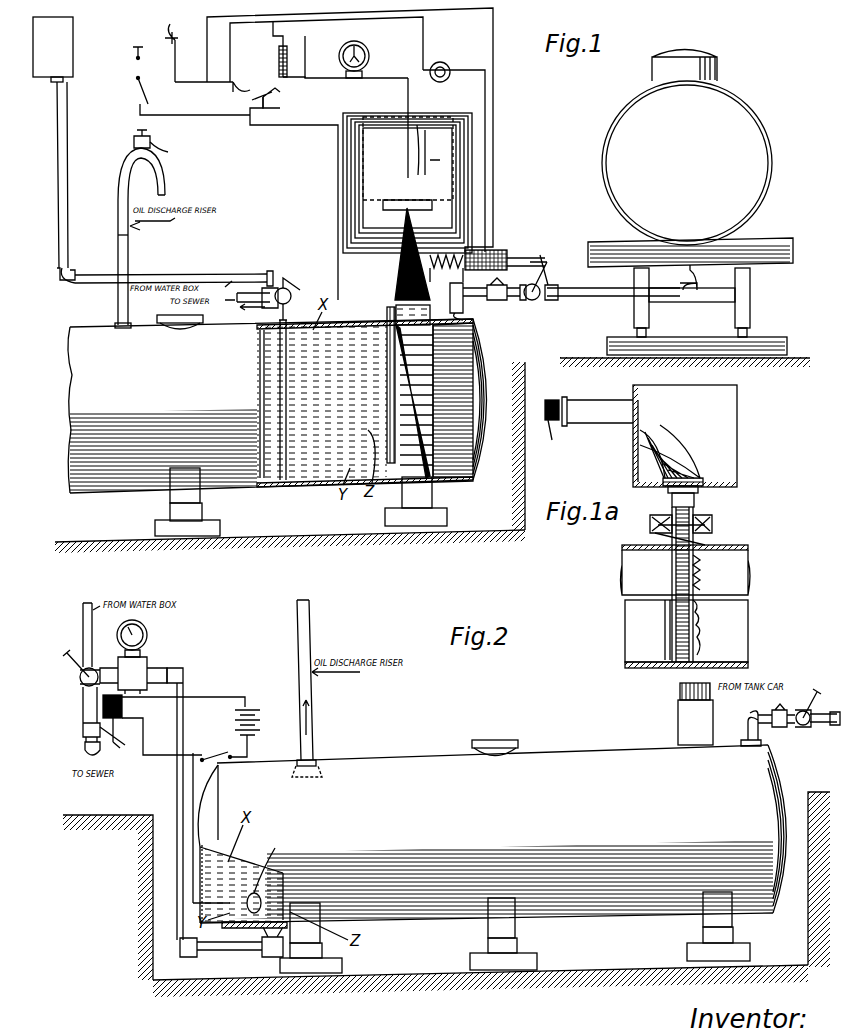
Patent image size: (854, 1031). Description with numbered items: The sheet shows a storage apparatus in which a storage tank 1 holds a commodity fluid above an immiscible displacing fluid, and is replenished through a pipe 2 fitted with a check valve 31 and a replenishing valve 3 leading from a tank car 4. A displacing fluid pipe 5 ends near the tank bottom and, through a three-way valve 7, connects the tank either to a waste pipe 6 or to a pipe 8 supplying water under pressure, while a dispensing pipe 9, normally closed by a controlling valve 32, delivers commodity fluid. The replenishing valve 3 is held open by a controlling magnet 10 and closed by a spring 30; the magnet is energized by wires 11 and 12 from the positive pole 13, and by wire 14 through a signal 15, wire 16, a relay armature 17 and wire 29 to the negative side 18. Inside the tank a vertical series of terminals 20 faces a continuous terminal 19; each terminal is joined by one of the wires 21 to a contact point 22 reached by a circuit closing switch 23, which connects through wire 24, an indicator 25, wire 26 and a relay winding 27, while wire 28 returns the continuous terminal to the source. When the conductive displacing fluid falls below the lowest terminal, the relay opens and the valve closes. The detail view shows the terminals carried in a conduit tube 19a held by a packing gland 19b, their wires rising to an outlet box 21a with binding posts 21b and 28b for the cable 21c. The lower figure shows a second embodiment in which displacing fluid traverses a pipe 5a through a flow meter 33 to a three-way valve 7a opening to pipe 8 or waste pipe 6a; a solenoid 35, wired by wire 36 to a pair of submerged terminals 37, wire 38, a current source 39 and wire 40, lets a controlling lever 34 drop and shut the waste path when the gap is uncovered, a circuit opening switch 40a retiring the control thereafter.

In FIG. 1, the storage tank 1 is at (317, 493).
In FIG. 1A, the storage tank 1 is at (738, 575).
In FIG. 2, the storage tank 1 is at (450, 797).
In FIG. 1, the supply pipe 2 is at (575, 297).
In FIG. 2, the supply pipe 2 is at (773, 728).
In FIG. 1, the replenishing valve 3 is at (539, 289).
In FIG. 2, the replenishing valve 3 is at (805, 727).
In FIG. 1, the tank car 4 is at (690, 203).
In FIG. 1, the displacing fluid pipe 5 is at (278, 485).
In FIG. 2, the displacing fluid pipe 5a is at (177, 783).
In FIG. 1, the waste pipe 6 is at (250, 290).
In FIG. 2, the waste pipe 6a is at (85, 746).
In FIG. 1, the three-way valve 7 is at (290, 292).
In FIG. 2, the three-way valve 7a is at (79, 671).
In FIG. 1, the water supply pipe 8 is at (69, 168).
In FIG. 2, the water supply pipe 8 is at (83, 633).
In FIG. 1, the dispensing pipe 9 is at (158, 178).
In FIG. 2, the dispensing pipe 9 is at (300, 690).
In FIG. 1, the controlling magnet 10 is at (509, 254).
In FIG. 1, the wire 11 is at (176, 42).
In FIG. 1, the wire 12 is at (228, 88).
In FIG. 1, the positive pole 13 is at (170, 30).
In FIG. 1, the wire 14 is at (486, 101).
In FIG. 1, the signal 15 is at (444, 64).
In FIG. 1, the wire 16 is at (275, 20).
In FIG. 1, the relay armature 17 is at (263, 95).
In FIG. 1, the negative side 18 is at (136, 60).
In FIG. 1, the continuous terminal 19 is at (424, 400).
In FIG. 1A, the continuous terminal 19 is at (668, 612).
In FIG. 1A, the conduit tube 19a is at (694, 500).
In FIG. 2, the conduit tube 19a is at (695, 722).
In FIG. 1A, the packing gland 19b is at (704, 523).
In FIG. 1, the terminals 20 is at (425, 372).
In FIG. 1A, the terminals 20 is at (700, 630).
In FIG. 1, the wires 21 is at (420, 345).
In FIG. 1A, the wires 21 is at (699, 563).
In FIG. 2, the wires 21 is at (678, 692).
In FIG. 1A, the outlet box 21a is at (738, 420).
In FIG. 1A, the binding posts 21b is at (660, 438).
In FIG. 1A, the cable 21c is at (595, 399).
In FIG. 1, the contact points 22 is at (418, 135).
In FIG. 1, the circuit closing switch 23 is at (382, 172).
In FIG. 1, the wire 24 is at (409, 108).
In FIG. 1, the indicator 25 is at (369, 50).
In FIG. 1, the wire 26 is at (308, 70).
In FIG. 1, the relay winding 27 is at (279, 58).
In FIG. 1, the wire 28 is at (385, 326).
In FIG. 1A, the wire 28 is at (557, 432).
In FIG. 1A, the binding post 28b is at (640, 443).
In FIG. 1, the wire 29 is at (180, 116).
In FIG. 1, the spring 30 is at (446, 271).
In FIG. 1, the check valve 31 is at (497, 297).
In FIG. 2, the check valve 31 is at (774, 710).
In FIG. 1, the controlling valve 32 is at (157, 150).
In FIG. 2, the controlling valve 32 is at (85, 722).
In FIG. 2, the flow meter 33 is at (147, 660).
In FIG. 2, the controlling lever 34 is at (112, 745).
In FIG. 2, the solenoid 35 is at (122, 708).
In FIG. 2, the wire 36 is at (144, 748).
In FIG. 2, the submerged electric terminals 37 is at (258, 885).
In FIG. 2, the wire 38 is at (215, 782).
In FIG. 2, the current source 39 is at (233, 725).
In FIG. 2, the wire 40 is at (210, 697).
In FIG. 2, the circuit opening switch 40a is at (213, 747).